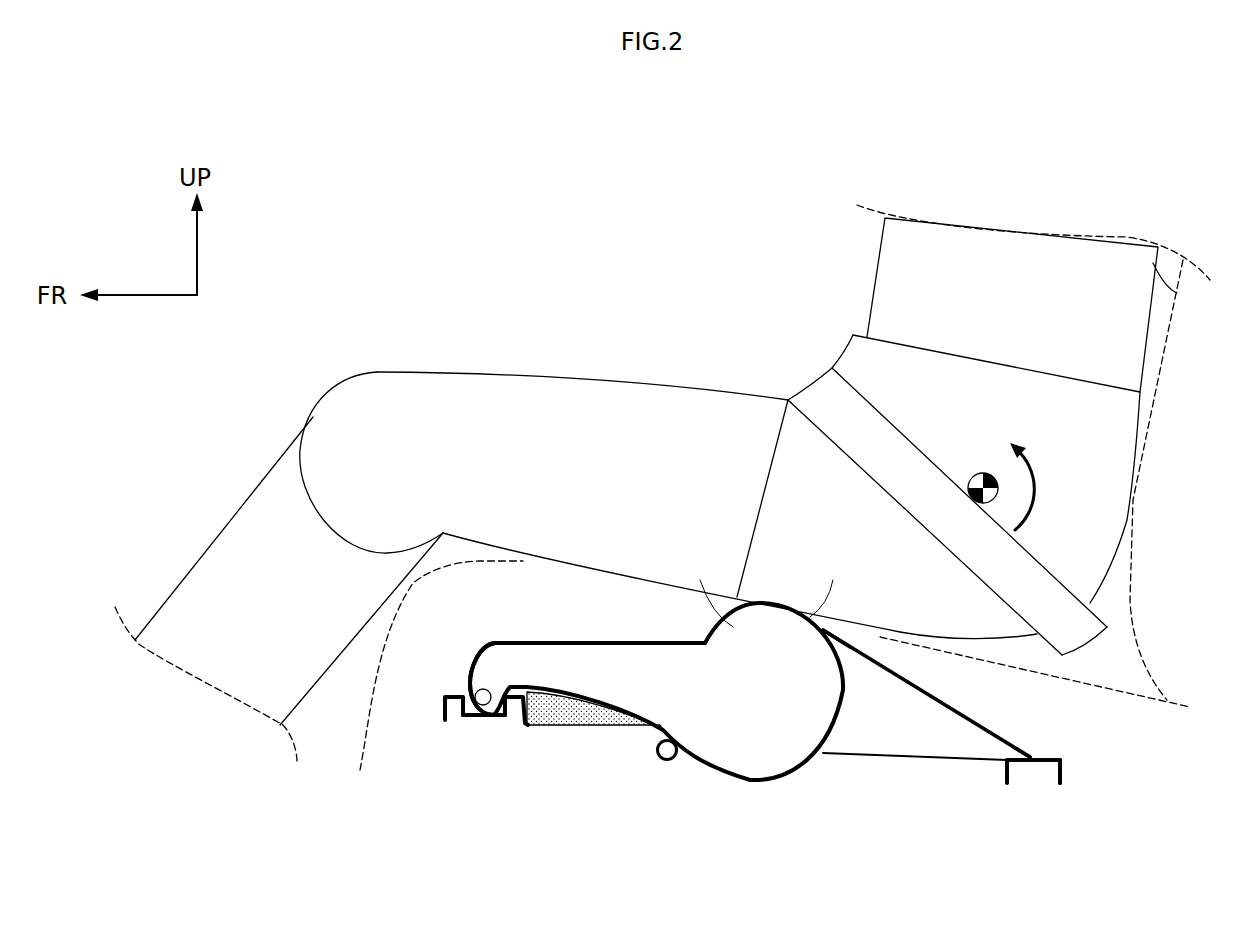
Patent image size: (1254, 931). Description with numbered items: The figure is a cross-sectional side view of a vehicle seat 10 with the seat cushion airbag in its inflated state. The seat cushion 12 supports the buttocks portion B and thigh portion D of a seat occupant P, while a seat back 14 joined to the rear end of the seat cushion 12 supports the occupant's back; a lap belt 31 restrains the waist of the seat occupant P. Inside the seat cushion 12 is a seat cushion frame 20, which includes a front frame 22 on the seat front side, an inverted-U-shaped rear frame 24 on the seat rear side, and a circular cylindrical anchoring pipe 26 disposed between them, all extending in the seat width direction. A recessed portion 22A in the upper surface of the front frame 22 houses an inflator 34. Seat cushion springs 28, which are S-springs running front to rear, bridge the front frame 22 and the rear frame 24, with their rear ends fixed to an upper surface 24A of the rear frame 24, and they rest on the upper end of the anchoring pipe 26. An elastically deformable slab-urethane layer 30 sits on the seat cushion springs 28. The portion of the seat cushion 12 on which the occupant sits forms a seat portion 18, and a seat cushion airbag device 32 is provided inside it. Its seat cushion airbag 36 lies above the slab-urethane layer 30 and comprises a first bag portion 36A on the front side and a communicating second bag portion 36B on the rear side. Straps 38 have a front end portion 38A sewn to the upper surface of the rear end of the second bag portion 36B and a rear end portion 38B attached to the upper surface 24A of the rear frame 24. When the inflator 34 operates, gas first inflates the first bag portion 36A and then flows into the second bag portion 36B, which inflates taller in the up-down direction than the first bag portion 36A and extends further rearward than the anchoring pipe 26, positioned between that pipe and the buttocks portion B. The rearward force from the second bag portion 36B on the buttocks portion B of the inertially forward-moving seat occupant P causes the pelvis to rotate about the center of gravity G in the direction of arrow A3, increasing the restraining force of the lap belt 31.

The vehicle seat 10 is at (592, 246).
The seat cushion 12 is at (1120, 687).
The seat back 14 is at (1140, 262).
The seat portion 18 is at (778, 660).
The seat cushion frame 20 is at (898, 800).
The front frame 22 is at (467, 712).
The recessed portion 22A is at (470, 688).
The rear frame 24 is at (1057, 800).
The upper surface of the rear frame 24A is at (1062, 757).
The anchoring pipe 26 is at (668, 770).
The seat cushion springs 28 is at (915, 784).
The slab-urethane layer 30 is at (582, 730).
The lap belt 31 is at (1047, 563).
The seat cushion airbag device 32 is at (783, 782).
The inflator 34 is at (491, 690).
The seat cushion airbag 36 is at (615, 602).
The first bag portion 36A is at (557, 640).
The second bag portion 36B is at (722, 627).
The straps 38 is at (953, 636).
The front end portion of the straps 38A is at (823, 628).
The rear end portion of the straps 38B is at (1030, 752).
The thigh portion D is at (702, 387).
The seat occupant P is at (866, 281).
The center of gravity G is at (990, 472).
The arrow A3 is at (1040, 498).
The buttocks portion B is at (1003, 625).